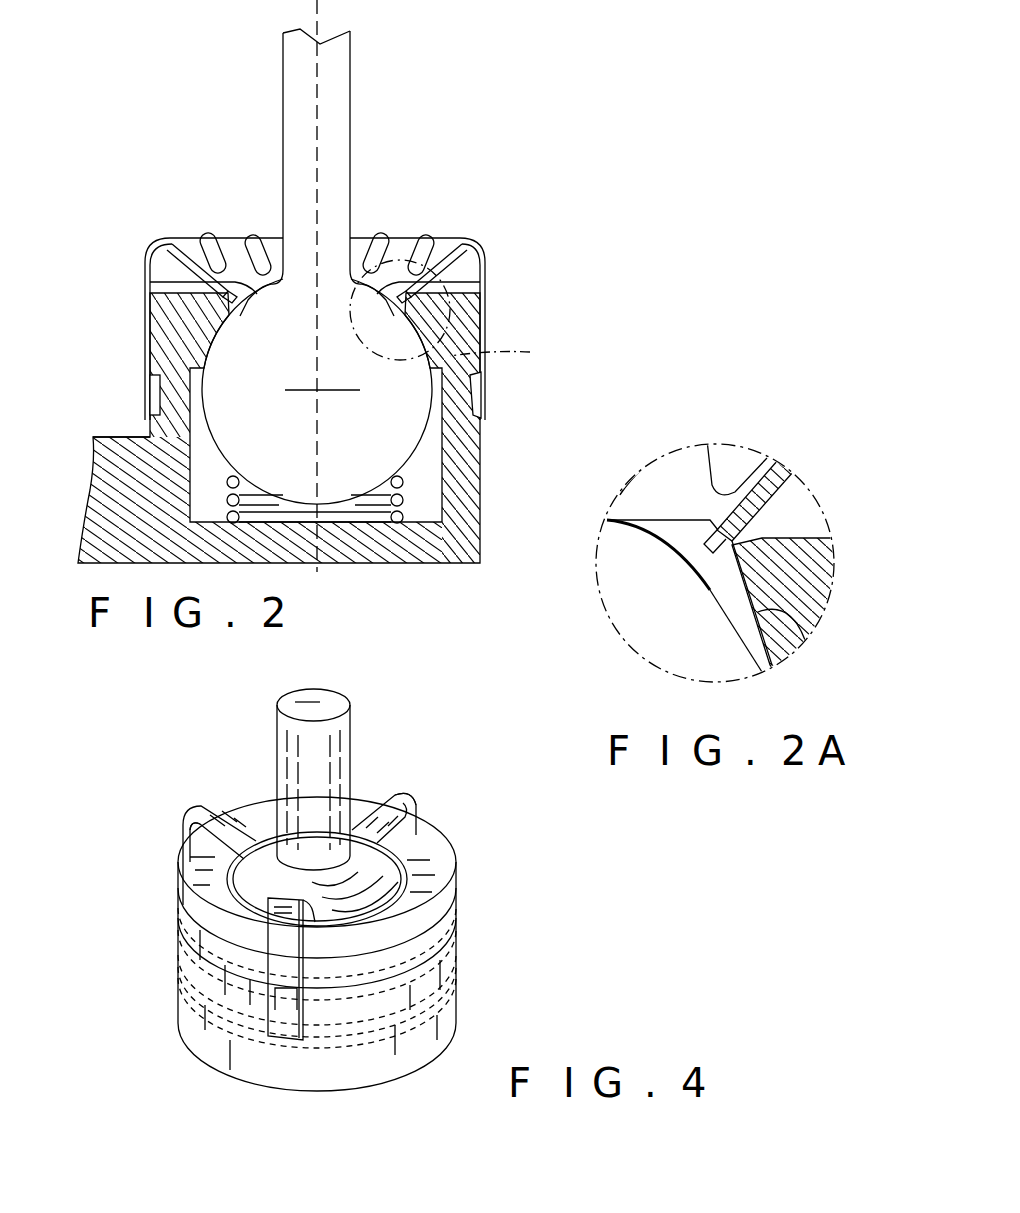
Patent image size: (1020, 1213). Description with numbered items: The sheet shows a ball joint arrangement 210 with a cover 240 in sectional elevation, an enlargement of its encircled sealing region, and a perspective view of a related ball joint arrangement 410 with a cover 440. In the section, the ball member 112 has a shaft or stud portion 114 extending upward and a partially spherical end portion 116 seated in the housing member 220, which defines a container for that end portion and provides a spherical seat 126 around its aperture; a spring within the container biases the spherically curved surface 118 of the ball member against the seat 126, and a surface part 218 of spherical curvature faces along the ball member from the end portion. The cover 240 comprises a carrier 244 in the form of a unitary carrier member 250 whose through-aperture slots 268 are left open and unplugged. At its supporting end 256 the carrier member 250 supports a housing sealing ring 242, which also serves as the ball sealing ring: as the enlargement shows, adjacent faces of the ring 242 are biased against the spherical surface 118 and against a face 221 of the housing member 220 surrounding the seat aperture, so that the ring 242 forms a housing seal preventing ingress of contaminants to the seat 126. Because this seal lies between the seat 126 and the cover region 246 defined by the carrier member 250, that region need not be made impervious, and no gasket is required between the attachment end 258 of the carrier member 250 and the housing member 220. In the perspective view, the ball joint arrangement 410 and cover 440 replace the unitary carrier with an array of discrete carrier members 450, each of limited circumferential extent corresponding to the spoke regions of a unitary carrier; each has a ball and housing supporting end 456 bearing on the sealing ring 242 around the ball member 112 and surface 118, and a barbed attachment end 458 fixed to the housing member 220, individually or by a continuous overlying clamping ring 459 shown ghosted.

In FIG. 2, the ball member 112 is at (255, 72).
In FIG. 4, the ball member 112 is at (362, 716).
In FIG. 2, the shaft or stud portion 114 is at (332, 106).
In FIG. 4, the shaft or stud portion 114 is at (335, 742).
In FIG. 2, the end portion 116 is at (317, 391).
In FIG. 2A, the end portion 116 is at (658, 582).
In FIG. 2, the spherically curved surface 118 is at (262, 296).
In FIG. 4, the spherically curved surface 118 is at (370, 890).
In FIG. 2, the spherical seat 126 is at (187, 336).
In FIG. 2A, the spherical seat 126 is at (796, 620).
In FIG. 2, the ball joint arrangement 210 is at (205, 158).
In FIG. 2, the surface part of spherical curvature 218 is at (378, 246).
In FIG. 2, the housing member 220 is at (120, 438).
In FIG. 4, the housing member 220 is at (205, 1030).
In FIG. 2A, the face of the housing member 221 is at (792, 548).
In FIG. 2, the cover 240 is at (455, 235).
In FIG. 2, the housing sealing ring 242 is at (380, 289).
In FIG. 2A, the housing sealing ring 242 is at (690, 545).
In FIG. 4, the housing sealing ring 242 is at (400, 858).
In FIG. 2, the carrier 244 is at (485, 247).
In FIG. 2, the cover region 246 is at (465, 275).
In FIG. 2, the unitary carrier member 250 is at (487, 267).
In FIG. 2A, the unitary carrier member 250 is at (758, 500).
In FIG. 2, the supporting end 256 is at (230, 287).
In FIG. 2A, the supporting end 256 is at (712, 498).
In FIG. 2, the attachment end 258 is at (485, 413).
In FIG. 2, the through-aperture slots 268 is at (422, 252).
In FIG. 4, the ball joint arrangement 410 is at (198, 722).
In FIG. 4, the cover 440 is at (182, 792).
In FIG. 4, the discrete carrier members 450 is at (393, 820).
In FIG. 4, the supporting end 456 is at (247, 845).
In FIG. 4, the attachment end 458 is at (178, 938).
In FIG. 4, the clamping ring 459 is at (458, 942).